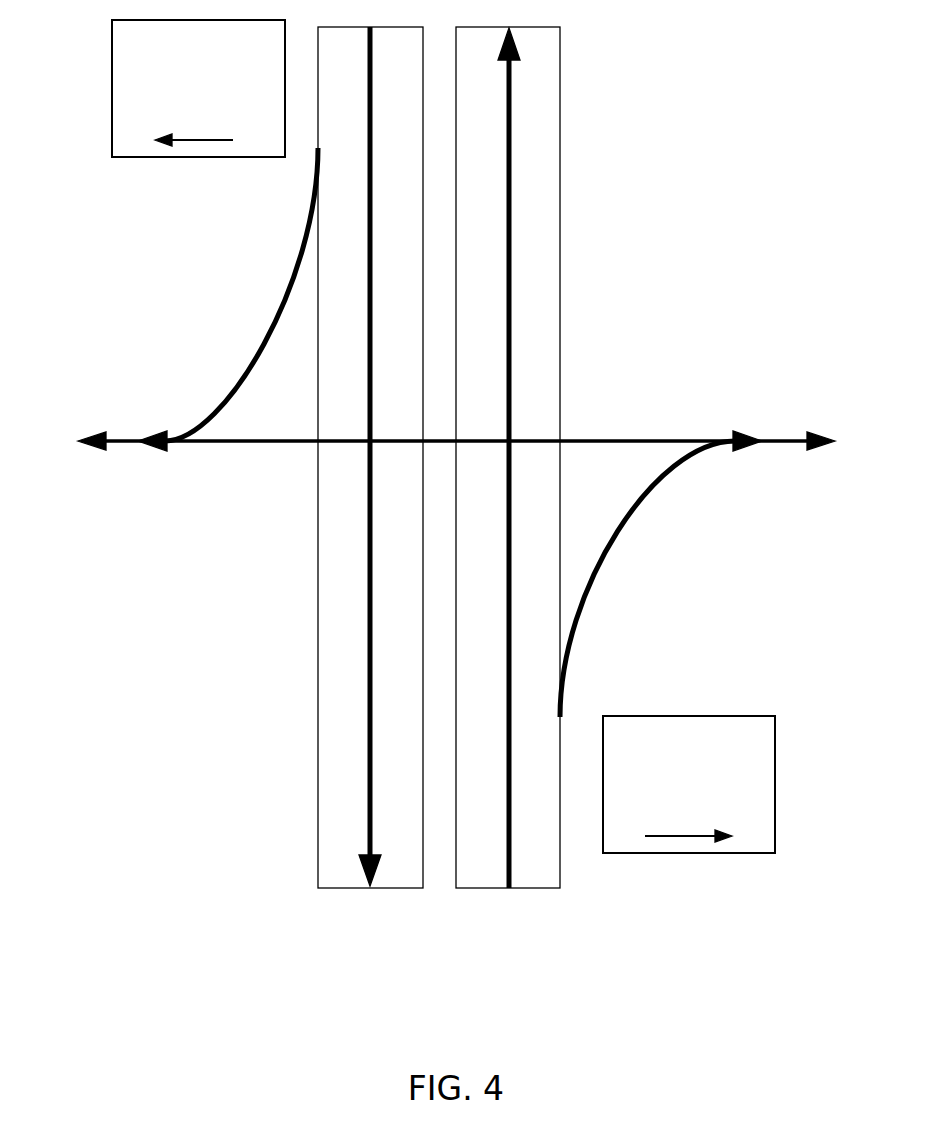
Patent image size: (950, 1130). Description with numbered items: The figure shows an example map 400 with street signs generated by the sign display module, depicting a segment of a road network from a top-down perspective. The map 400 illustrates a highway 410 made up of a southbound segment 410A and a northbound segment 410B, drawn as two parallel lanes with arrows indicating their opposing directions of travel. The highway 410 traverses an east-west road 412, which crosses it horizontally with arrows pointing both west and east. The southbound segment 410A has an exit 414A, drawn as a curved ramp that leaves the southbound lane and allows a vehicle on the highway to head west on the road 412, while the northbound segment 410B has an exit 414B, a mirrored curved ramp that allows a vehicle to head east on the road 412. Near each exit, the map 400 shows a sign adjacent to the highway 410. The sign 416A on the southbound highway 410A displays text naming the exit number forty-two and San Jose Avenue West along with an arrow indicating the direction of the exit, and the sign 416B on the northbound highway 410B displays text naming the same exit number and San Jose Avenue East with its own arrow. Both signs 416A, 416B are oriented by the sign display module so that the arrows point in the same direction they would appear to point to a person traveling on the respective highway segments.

The map 400 is at (712, 119).
The highway 410 is at (434, 518).
The southbound segment 410A is at (318, 540).
The northbound segment 410B is at (560, 322).
The east-west road 412 is at (664, 440).
The exit 414A is at (263, 352).
The exit 414B is at (593, 585).
The sign 416A is at (110, 97).
The sign 416B is at (775, 818).